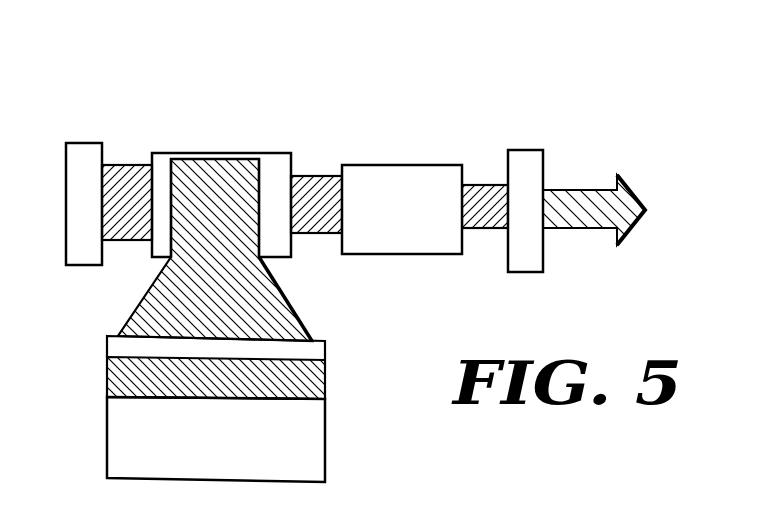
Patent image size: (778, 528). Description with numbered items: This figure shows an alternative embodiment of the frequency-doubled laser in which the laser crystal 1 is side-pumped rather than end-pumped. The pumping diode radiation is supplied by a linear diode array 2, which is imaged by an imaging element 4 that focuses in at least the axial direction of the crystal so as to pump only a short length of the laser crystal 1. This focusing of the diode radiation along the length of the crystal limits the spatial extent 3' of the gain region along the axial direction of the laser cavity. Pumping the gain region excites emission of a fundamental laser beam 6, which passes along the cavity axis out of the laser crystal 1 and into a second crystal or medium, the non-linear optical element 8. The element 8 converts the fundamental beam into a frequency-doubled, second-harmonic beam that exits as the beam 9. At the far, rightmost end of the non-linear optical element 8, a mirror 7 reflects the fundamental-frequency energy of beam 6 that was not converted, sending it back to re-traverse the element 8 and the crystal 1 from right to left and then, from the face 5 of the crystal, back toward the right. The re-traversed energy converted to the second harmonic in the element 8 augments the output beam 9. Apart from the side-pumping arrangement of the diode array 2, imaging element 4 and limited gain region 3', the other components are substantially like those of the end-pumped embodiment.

The laser crystal 1 is at (292, 258).
The linear diode array 2 is at (323, 428).
The spatial extent of the gain region 3' is at (225, 189).
The imaging element 4 is at (107, 346).
The face 5 is at (65, 252).
The fundamental laser beam 6 is at (122, 165).
The mirror 7 is at (530, 272).
The non-linear optical element 8 is at (396, 165).
The frequency-doubled beam 9 is at (578, 190).